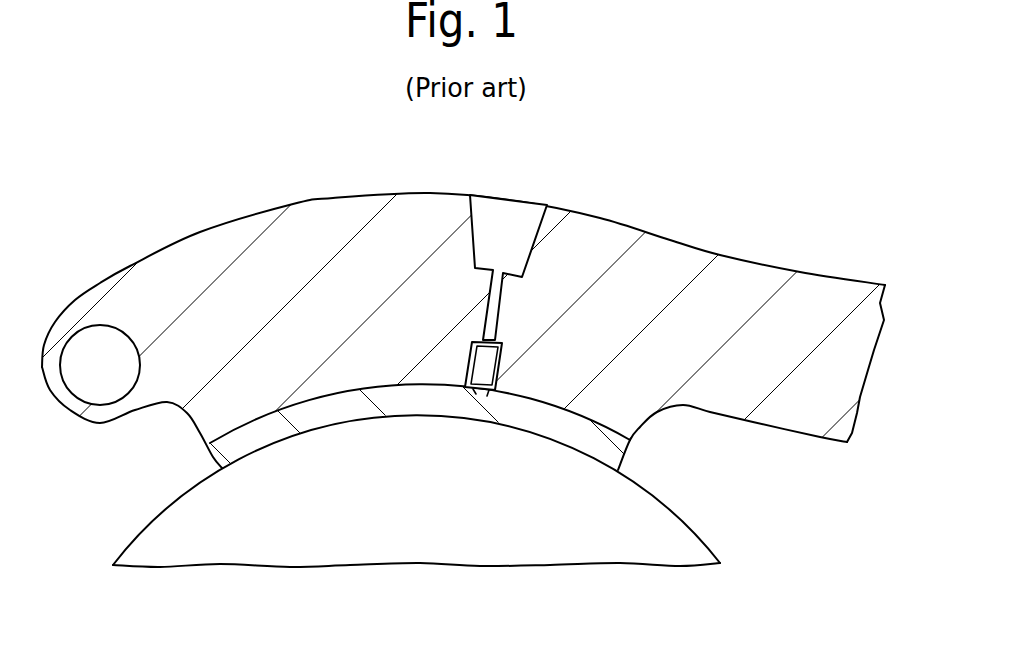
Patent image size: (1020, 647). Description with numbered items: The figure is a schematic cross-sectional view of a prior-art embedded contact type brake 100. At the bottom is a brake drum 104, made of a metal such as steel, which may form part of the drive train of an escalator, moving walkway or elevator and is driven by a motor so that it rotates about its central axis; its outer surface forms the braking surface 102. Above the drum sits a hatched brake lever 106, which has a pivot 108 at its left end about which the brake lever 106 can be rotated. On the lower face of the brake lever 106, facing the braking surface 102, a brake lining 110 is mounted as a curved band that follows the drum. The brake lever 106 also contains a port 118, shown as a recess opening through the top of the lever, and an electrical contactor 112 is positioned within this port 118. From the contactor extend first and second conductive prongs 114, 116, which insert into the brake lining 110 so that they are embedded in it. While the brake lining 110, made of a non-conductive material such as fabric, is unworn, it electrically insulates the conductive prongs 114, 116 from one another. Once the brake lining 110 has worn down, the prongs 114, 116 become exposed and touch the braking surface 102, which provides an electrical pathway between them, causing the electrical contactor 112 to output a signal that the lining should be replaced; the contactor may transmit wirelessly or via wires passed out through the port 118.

The brake 100 is at (852, 200).
The braking surface 102 is at (313, 437).
The brake drum 104 is at (653, 492).
The brake lever 106 is at (215, 250).
The pivot 108 is at (100, 340).
The brake lining 110 is at (347, 403).
The electrical contactor 112 is at (502, 343).
The first conductive prong 114 is at (470, 393).
The second conductive prong 116 is at (487, 396).
The port 118 is at (473, 342).